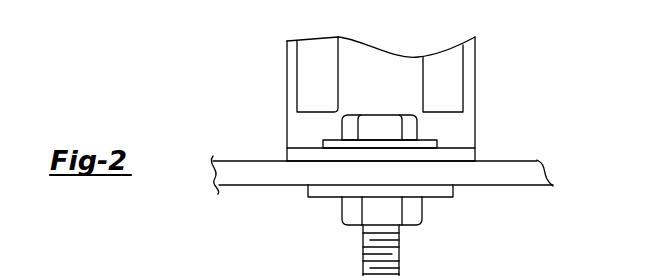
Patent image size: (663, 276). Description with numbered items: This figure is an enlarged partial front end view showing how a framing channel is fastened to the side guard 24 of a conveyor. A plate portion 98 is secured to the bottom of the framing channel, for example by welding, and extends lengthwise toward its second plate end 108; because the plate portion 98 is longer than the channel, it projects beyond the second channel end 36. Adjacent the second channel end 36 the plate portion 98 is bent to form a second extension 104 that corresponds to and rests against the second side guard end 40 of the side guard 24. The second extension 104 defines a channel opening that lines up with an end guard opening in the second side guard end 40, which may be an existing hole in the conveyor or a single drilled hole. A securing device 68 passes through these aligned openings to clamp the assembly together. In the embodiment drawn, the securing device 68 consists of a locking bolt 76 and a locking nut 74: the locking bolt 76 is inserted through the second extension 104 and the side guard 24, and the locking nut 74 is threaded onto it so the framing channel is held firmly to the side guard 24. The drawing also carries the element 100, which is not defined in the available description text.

The mounting plate 24 is at (382, 199).
The upper nut 36 is at (442, 113).
The lower surface of plate 40 is at (258, 185).
The spacer washer 68 is at (317, 204).
The lower nut 74 is at (415, 212).
The threaded bolt 76 is at (395, 257).
The bracket flange 98 is at (470, 60).
The mounting bracket 100 is at (367, 99).
The washer 104 is at (462, 147).
The bracket base 108 is at (290, 153).